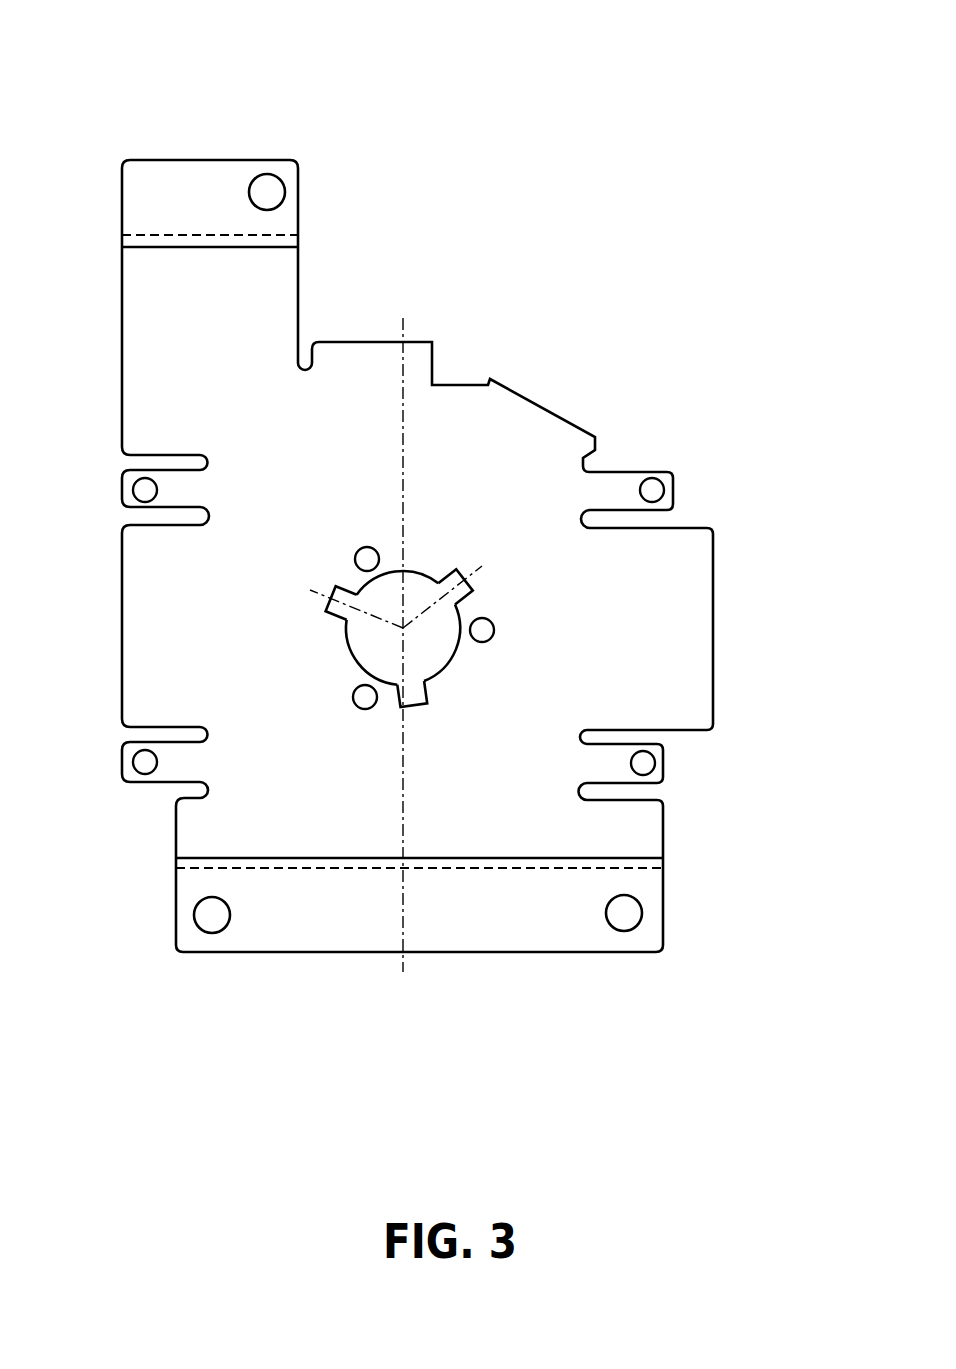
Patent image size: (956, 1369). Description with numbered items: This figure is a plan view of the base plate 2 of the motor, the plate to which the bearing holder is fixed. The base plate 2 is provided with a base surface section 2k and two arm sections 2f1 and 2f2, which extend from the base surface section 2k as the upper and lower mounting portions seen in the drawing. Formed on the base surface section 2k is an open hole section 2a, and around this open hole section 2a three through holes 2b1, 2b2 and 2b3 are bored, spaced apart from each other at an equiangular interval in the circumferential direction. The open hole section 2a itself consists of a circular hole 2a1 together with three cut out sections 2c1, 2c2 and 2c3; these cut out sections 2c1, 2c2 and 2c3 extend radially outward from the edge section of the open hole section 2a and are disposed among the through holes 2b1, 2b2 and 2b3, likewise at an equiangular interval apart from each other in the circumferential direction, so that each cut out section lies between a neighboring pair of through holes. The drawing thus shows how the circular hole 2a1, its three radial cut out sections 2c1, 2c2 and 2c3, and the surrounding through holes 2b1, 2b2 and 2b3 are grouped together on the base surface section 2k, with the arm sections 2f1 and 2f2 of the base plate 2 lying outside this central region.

The base plate 2 is at (155, 59).
The arm section 2f1 is at (180, 197).
The arm section 2f2 is at (285, 908).
The base surface section 2k is at (672, 107).
The through hole 2b1 is at (366, 548).
The through hole 2b2 is at (484, 619).
The through hole 2b3 is at (357, 692).
The open hole section 2a is at (508, 225).
The circular hole 2a1 is at (412, 600).
The cut out section 2c1 is at (453, 588).
The cut out section 2c2 is at (430, 697).
The cut out section 2c3 is at (335, 590).